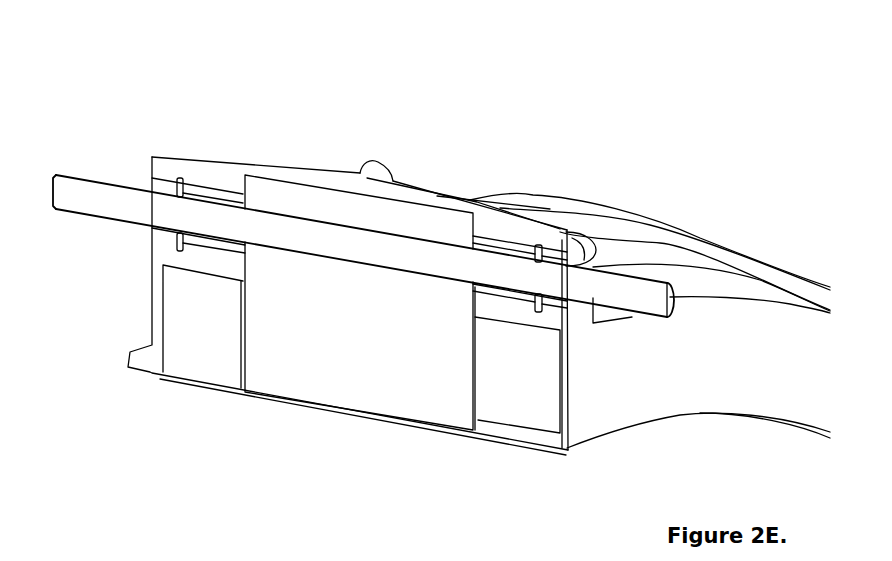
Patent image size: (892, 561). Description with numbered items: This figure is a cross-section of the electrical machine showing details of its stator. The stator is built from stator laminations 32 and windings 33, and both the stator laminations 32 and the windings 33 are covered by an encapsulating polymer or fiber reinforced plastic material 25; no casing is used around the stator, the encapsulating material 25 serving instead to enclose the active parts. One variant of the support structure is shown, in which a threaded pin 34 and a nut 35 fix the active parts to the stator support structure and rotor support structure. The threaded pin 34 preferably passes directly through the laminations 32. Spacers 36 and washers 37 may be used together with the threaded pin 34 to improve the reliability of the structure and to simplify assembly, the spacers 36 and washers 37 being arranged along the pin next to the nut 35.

The encapsulating composite material 25 is at (170, 168).
The stator laminations 32 is at (293, 197).
The windings 33 is at (187, 362).
The threaded pin 34 is at (68, 192).
The nut 35 is at (567, 230).
The spacer 36 is at (493, 245).
The washer 37 is at (536, 245).